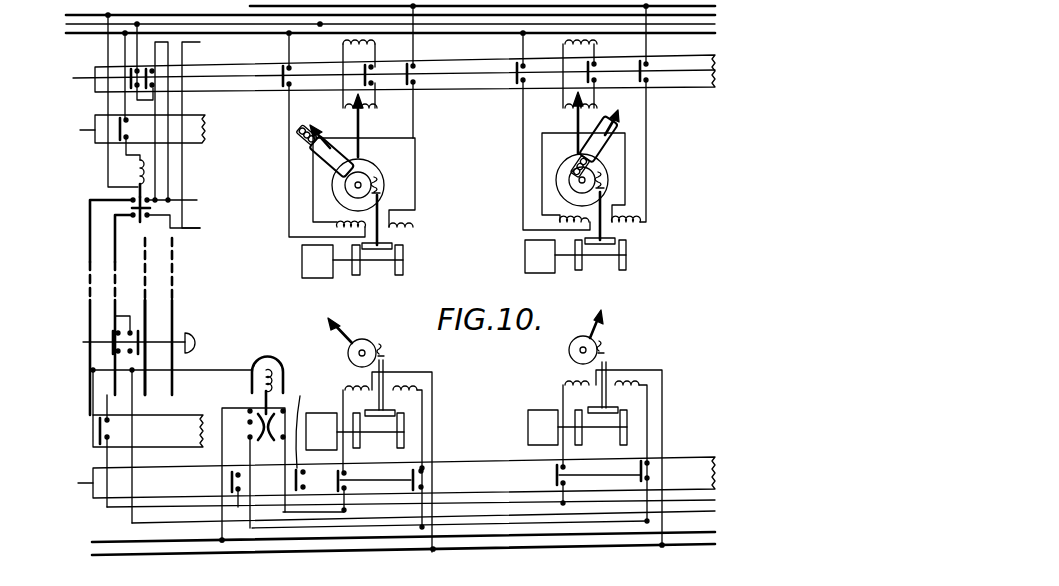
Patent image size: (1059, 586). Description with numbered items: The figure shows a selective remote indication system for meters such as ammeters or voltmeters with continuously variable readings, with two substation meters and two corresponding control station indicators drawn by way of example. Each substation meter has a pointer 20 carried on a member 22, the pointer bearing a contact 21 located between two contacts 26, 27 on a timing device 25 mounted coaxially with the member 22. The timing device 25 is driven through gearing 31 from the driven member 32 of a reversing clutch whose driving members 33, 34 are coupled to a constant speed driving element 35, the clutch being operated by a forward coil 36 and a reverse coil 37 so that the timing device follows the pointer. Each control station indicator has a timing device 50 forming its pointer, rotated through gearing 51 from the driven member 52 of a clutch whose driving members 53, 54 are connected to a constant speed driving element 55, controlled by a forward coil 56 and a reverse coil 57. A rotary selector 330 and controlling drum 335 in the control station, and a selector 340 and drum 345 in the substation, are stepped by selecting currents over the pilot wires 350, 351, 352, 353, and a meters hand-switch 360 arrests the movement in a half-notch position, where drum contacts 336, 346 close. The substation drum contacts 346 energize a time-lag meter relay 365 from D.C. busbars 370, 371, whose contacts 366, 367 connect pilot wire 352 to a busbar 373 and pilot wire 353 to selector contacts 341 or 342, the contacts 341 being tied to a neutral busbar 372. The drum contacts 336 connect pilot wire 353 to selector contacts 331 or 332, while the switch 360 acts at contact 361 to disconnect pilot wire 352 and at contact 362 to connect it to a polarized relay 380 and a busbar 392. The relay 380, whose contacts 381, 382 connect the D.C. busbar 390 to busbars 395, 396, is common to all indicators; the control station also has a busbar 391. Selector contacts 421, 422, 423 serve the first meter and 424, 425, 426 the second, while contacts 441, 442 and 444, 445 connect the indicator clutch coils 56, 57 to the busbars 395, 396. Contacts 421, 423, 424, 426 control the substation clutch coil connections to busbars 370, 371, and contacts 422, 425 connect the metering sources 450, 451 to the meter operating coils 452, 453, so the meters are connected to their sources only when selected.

The meter pointer 20 is at (318, 136).
The contact 21 is at (318, 146).
The member 22 is at (372, 168).
The timing device 25 is at (338, 170).
The contact 26 is at (332, 140).
The contact 27 is at (305, 155).
The gearing 31 is at (382, 185).
The driven member 32 is at (383, 250).
The driving member 33 is at (403, 262).
The driving member 34 is at (356, 275).
The constant speed driving element 35 is at (310, 268).
The forward coil 36 is at (413, 226).
The reverse coil 37 is at (337, 230).
The timing device 50 is at (342, 335).
The gearing 51 is at (385, 353).
The driven member 52 is at (395, 414).
The driving member 53 is at (404, 440).
The driving member 54 is at (358, 444).
The constant speed driving element 55 is at (528, 426).
The forward coil 56 is at (412, 372).
The reverse coil 57 is at (347, 388).
The selector 330 is at (160, 490).
The contacts 331 is at (230, 482).
The contacts 332 is at (311, 437).
The rotary controlling drum 335 is at (180, 420).
The drum contacts 336 is at (90, 426).
The selector 340 is at (215, 93).
The contacts 341 is at (95, 74).
The contacts 342 is at (155, 79).
The rotary controlling drum 345 is at (175, 128).
The drum contacts 346 is at (118, 125).
The pilot wire 350 is at (172, 290).
The pilot wire 351 is at (146, 303).
The pilot wire 352 is at (115, 246).
The pilot wire 353 is at (90, 225).
The meters hand-switch 360 is at (197, 343).
The contact 361 is at (118, 335).
The contact 362 is at (142, 340).
The time-lag meter relay 365 is at (137, 182).
The contact 366 is at (155, 200).
The contact 367 is at (150, 222).
The D.C. busbar 370 is at (250, 8).
The D.C. busbar 371 is at (268, 34).
The D.C. neutral busbar 372 is at (183, 24).
The busbar 373 is at (645, 33).
The polarized relay 380 is at (276, 368).
The contact 381 is at (248, 430).
The contact 382 is at (283, 405).
The D.C. busbar 390 is at (482, 537).
The D.C. busbar 391 is at (540, 552).
The busbar 392 is at (690, 512).
The busbar 395 is at (700, 520).
The busbar 396 is at (700, 500).
The selector contact 421 is at (282, 77).
The selector contact 422 is at (400, 98).
The selector contact 423 is at (414, 84).
The selector contact 424 is at (516, 80).
The selector contact 425 is at (596, 66).
The selector contact 426 is at (648, 70).
The selector contact 441 is at (336, 483).
The selector contact 442 is at (425, 479).
The selector contact 444 is at (555, 475).
The selector contact 445 is at (648, 473).
The metering source 450 is at (376, 72).
The metering source 451 is at (564, 46).
The operating coil 452 is at (420, 120).
The operating coil 453 is at (563, 108).